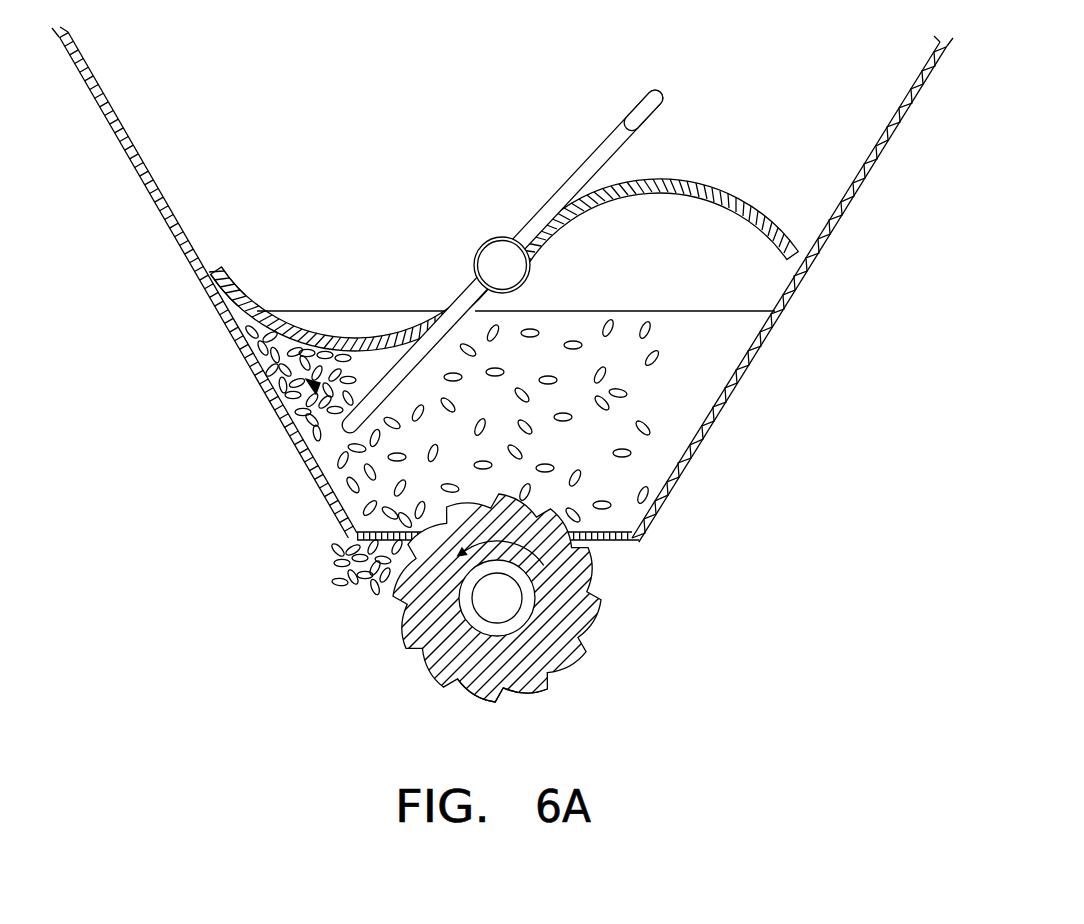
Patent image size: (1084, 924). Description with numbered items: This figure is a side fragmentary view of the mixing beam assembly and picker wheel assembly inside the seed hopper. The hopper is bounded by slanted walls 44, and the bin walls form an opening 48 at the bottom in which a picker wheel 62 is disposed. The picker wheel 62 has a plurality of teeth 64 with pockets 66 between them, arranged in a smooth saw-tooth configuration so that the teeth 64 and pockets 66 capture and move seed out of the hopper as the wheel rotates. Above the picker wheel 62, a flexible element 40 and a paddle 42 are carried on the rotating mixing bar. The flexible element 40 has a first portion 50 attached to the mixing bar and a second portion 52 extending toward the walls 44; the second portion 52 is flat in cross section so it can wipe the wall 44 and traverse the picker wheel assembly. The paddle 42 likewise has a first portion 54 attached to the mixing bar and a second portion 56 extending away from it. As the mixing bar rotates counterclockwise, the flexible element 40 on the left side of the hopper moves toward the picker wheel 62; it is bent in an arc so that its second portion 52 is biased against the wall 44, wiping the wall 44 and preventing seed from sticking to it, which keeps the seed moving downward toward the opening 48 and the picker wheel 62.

The flexible element 40 is at (356, 273).
The paddle 42 is at (562, 225).
The wall 44 is at (120, 118).
The opening 48 is at (587, 540).
The first portion 50 is at (447, 293).
The second portion 52 is at (237, 283).
The first portion 54 is at (500, 237).
The second portion 56 is at (662, 94).
The picker wheel 62 is at (515, 621).
The tooth 64 is at (540, 690).
The pocket 66 is at (500, 683).